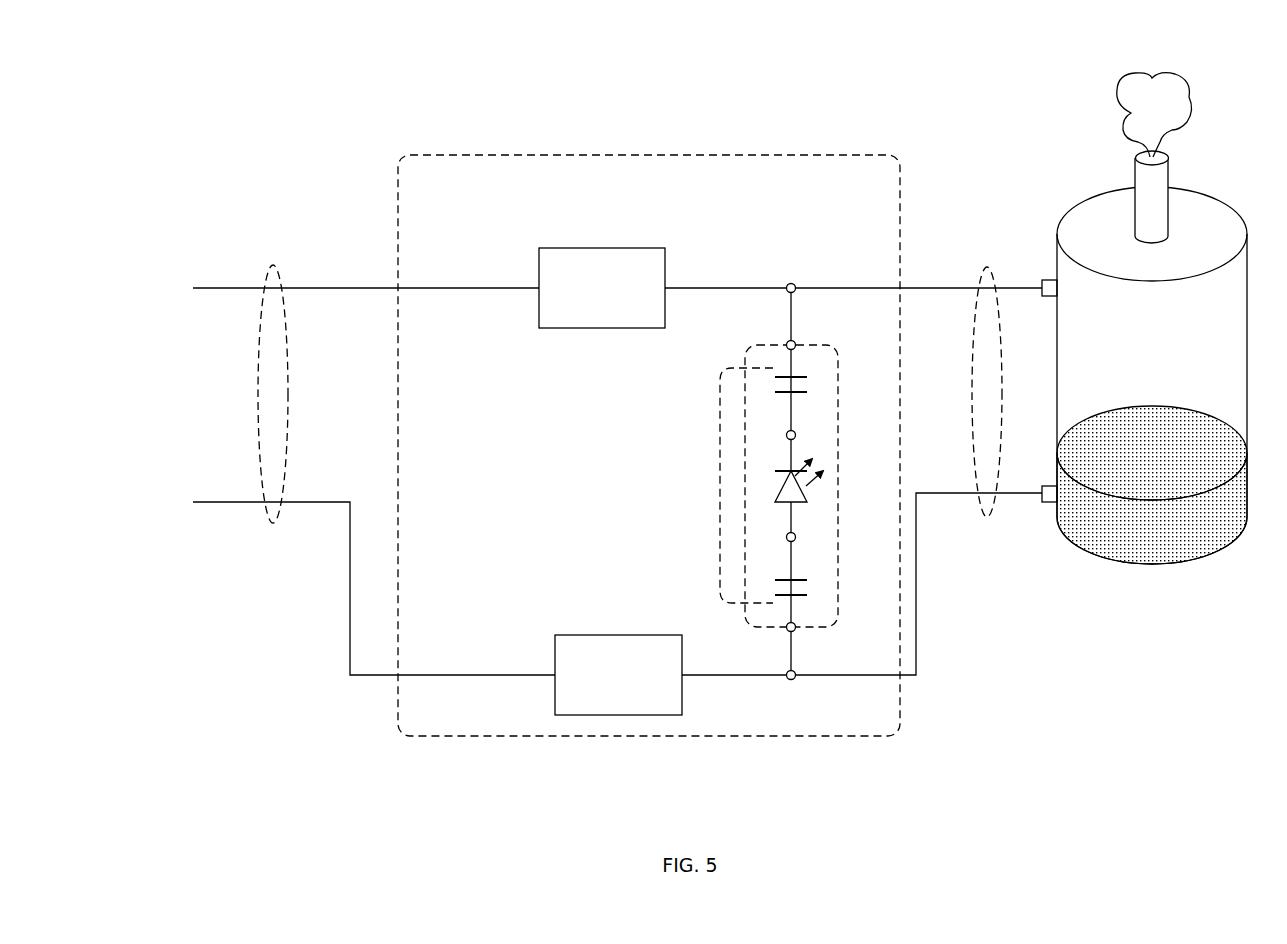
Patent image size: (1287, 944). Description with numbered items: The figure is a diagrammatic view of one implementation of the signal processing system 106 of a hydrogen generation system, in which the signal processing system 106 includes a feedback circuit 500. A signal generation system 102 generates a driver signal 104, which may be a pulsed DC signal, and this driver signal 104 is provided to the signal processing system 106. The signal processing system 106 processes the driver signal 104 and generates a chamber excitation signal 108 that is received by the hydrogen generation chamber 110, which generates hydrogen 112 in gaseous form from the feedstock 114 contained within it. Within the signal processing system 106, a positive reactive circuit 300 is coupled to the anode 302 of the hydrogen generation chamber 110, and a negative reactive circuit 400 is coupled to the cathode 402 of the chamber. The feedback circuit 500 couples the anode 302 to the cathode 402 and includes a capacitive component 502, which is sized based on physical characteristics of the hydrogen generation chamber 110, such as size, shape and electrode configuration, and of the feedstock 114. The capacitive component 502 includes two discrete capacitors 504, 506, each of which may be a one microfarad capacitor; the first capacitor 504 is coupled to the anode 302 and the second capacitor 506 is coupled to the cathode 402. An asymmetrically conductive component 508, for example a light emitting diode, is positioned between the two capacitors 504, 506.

The signal generation system 102 is at (181, 397).
The driver signal 104 is at (276, 522).
The signal processing system 106 is at (900, 187).
The chamber excitation signal 108 is at (985, 267).
The hydrogen generation chamber 110 is at (1152, 375).
The hydrogen 112 is at (1154, 158).
The feedstock 114 is at (1152, 485).
The positive reactive circuit 300 is at (602, 288).
The anode 302 is at (1042, 284).
The negative reactive circuit 400 is at (618, 675).
The cathode 402 is at (1040, 498).
The feedback circuit 500 is at (832, 346).
The capacitive component 502 is at (719, 497).
The capacitor 504 is at (808, 384).
The capacitor 506 is at (808, 587).
The asymmetrically conductive component 508 is at (808, 490).